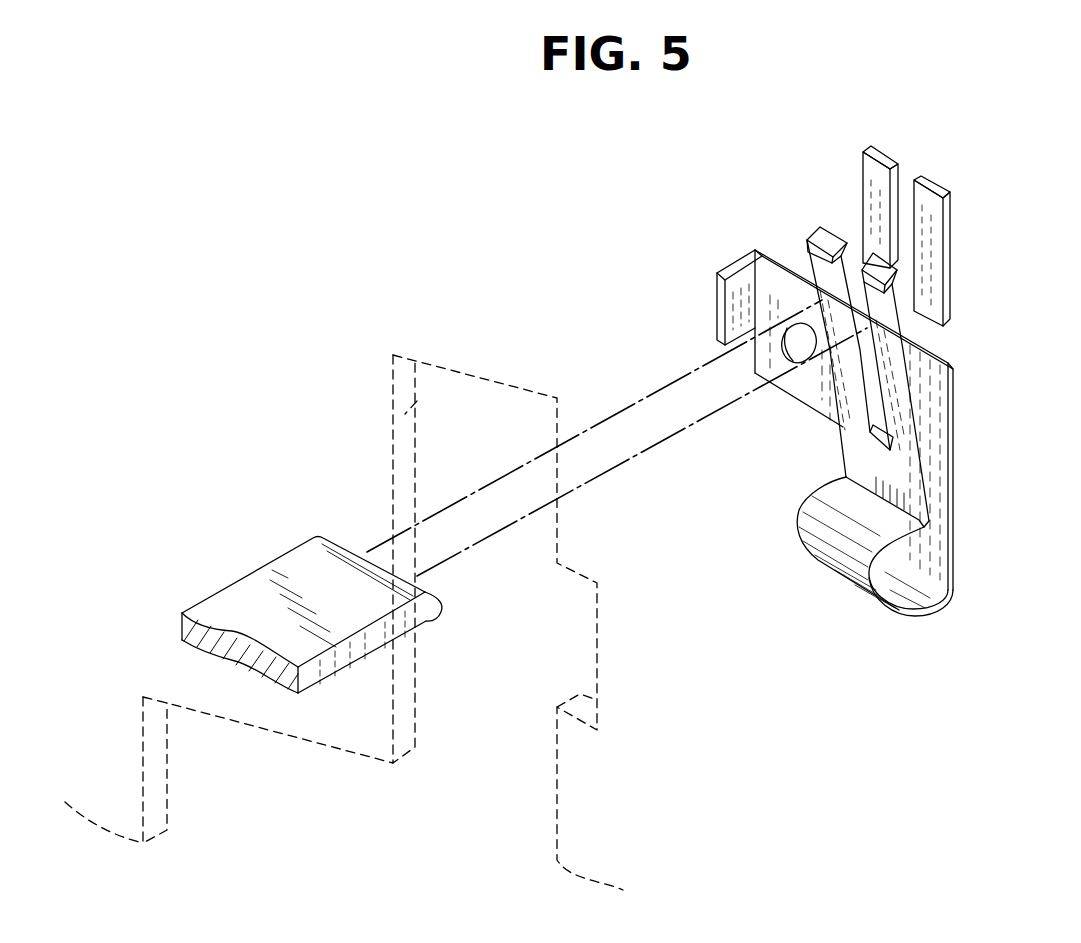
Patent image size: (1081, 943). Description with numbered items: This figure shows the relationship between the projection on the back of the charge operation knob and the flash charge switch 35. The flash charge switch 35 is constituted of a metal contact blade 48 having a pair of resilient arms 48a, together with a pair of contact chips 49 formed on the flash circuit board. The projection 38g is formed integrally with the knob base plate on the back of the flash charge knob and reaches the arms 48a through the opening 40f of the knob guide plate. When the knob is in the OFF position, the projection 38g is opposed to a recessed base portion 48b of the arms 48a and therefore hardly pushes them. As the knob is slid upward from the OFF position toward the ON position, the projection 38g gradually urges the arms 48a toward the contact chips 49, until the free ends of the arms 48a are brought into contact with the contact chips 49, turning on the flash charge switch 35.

The flash charge switch 35 is at (786, 148).
The contact chips 49 is at (937, 215).
The metal contact blade 48 is at (937, 427).
The resilient arms 48a is at (808, 248).
The recessed base portion 48b is at (848, 477).
The projection 38g is at (267, 592).
The opening 40f is at (417, 401).